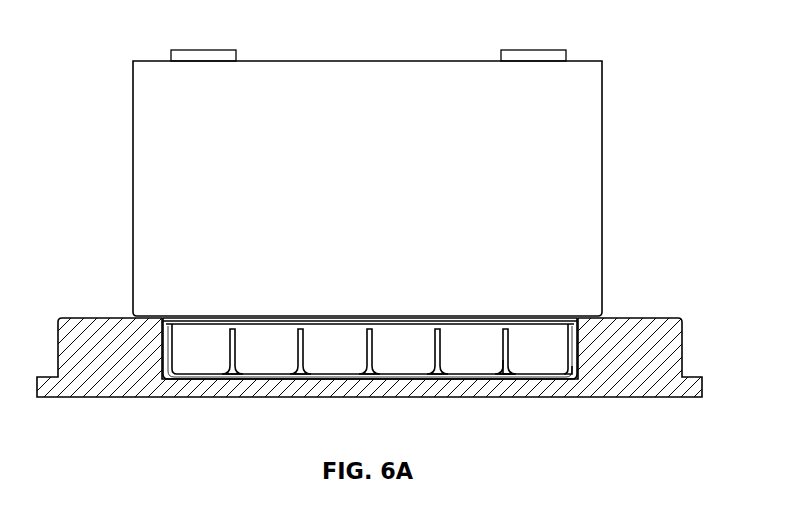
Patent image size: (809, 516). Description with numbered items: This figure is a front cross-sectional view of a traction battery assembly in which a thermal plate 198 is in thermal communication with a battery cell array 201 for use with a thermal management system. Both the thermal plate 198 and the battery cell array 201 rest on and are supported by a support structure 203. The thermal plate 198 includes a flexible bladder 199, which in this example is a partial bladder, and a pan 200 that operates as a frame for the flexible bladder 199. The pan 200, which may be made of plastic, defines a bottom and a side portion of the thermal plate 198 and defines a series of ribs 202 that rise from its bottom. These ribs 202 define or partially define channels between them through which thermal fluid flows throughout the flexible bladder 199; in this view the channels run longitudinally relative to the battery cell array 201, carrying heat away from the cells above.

The battery cell array 201 is at (425, 58).
The flexible bladder 199 is at (570, 320).
The support structure 203 is at (682, 352).
The ribs 202 is at (297, 378).
The thermal plate 198 is at (505, 377).
The pan 200 is at (575, 373).